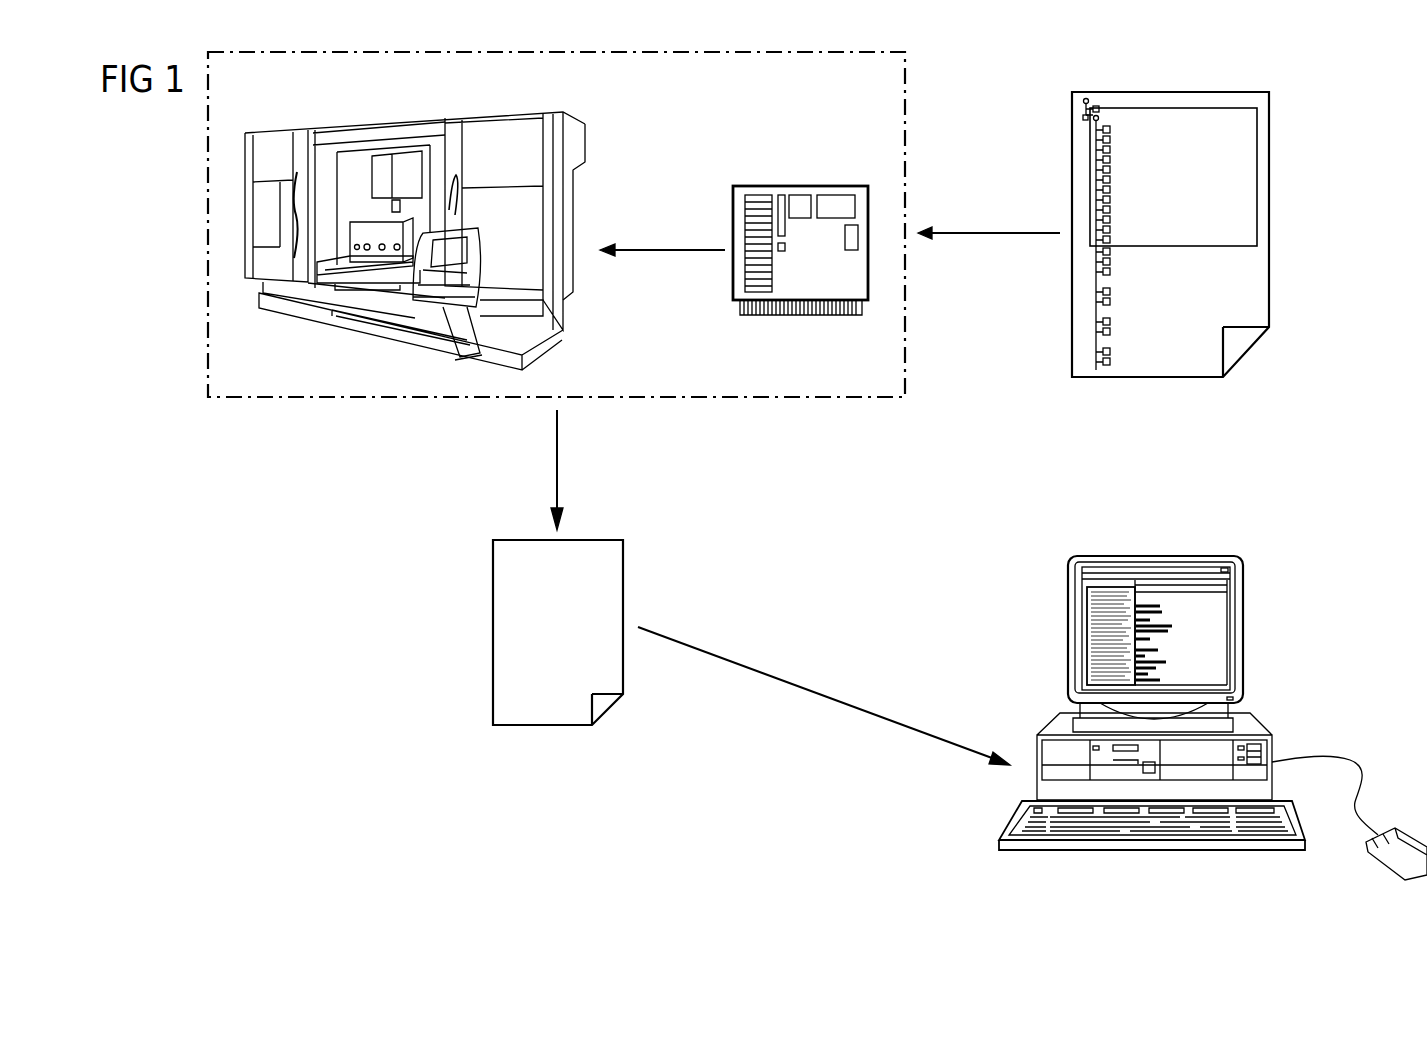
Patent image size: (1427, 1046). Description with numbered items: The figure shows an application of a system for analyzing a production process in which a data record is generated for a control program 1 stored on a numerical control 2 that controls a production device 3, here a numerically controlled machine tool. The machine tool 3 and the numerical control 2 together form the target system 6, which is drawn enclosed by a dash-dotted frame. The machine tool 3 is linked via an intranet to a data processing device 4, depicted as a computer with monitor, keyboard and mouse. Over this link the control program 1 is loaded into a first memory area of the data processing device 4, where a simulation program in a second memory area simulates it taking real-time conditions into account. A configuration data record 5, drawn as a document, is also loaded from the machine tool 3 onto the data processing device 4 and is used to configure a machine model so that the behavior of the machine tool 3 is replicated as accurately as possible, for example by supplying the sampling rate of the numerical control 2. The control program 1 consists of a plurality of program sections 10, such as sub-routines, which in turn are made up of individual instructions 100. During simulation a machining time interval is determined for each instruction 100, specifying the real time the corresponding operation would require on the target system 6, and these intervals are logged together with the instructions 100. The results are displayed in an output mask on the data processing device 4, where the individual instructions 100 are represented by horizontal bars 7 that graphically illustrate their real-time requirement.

The control program 1 is at (1269, 256).
The numerical control 2 is at (755, 190).
The production device 3 is at (500, 144).
The data processing device 4 is at (1213, 718).
The configuration data record 5 is at (492, 637).
The target system 6 is at (777, 399).
The horizontal bars 7 is at (1163, 627).
The program sections 10 is at (1166, 388).
The instructions 100 is at (1097, 168).